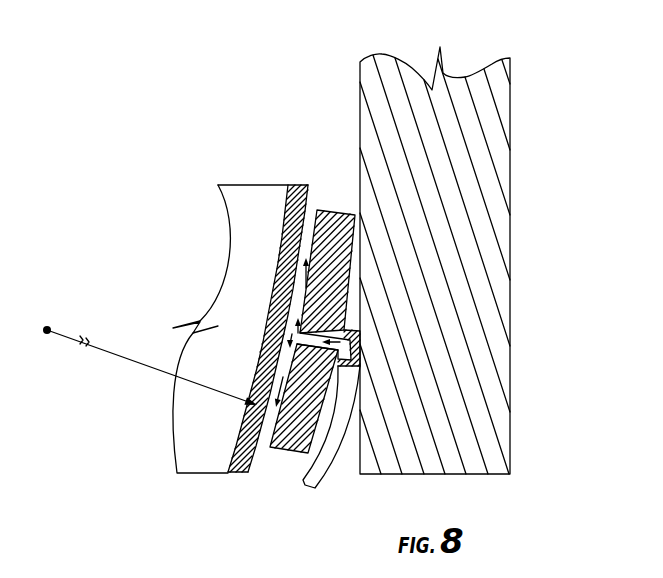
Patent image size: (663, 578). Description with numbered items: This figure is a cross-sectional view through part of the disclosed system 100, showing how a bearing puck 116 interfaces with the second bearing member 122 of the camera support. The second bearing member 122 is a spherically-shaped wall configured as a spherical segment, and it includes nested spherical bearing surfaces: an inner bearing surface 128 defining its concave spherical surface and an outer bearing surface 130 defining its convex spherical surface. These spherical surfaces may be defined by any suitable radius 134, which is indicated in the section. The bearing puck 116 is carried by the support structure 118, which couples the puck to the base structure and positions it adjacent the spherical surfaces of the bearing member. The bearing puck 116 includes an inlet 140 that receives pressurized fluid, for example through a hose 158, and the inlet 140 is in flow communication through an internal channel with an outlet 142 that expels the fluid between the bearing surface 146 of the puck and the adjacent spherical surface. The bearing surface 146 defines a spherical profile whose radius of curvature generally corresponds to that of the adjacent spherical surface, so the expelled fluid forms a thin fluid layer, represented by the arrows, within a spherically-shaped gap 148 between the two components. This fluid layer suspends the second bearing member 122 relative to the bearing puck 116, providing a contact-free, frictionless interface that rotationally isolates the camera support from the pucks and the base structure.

The system 100 is at (150, 76).
The bearing puck 116 is at (339, 207).
The support structure 118 is at (510, 90).
The second bearing member 122 is at (243, 183).
The inner bearing surface 128 is at (282, 258).
The outer bearing surface 130 is at (255, 462).
The radius 134 is at (122, 362).
The inlet 140 is at (355, 360).
The outlet 142 is at (320, 333).
The bearing surface 146 is at (262, 430).
The spherically-shaped gap 148 is at (313, 195).
The hose 158 is at (325, 470).